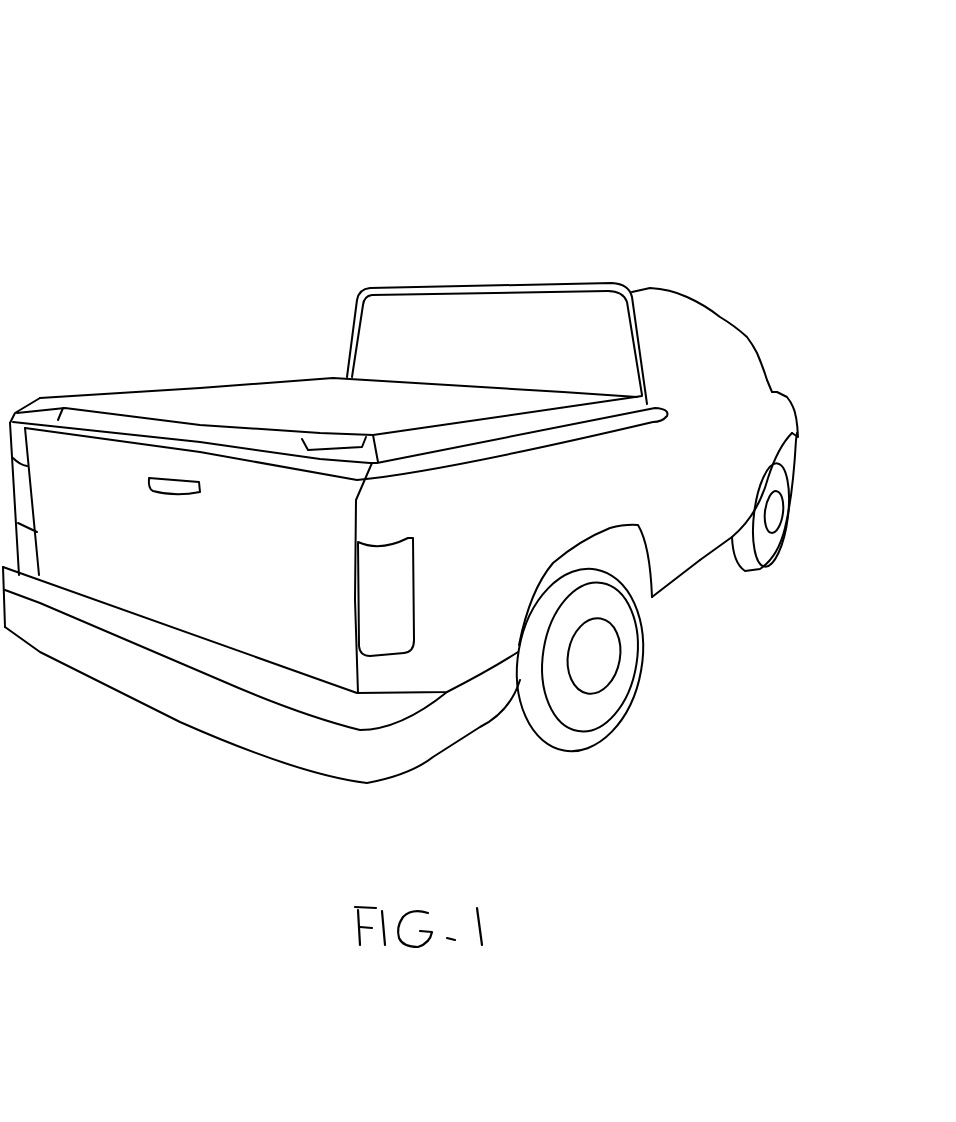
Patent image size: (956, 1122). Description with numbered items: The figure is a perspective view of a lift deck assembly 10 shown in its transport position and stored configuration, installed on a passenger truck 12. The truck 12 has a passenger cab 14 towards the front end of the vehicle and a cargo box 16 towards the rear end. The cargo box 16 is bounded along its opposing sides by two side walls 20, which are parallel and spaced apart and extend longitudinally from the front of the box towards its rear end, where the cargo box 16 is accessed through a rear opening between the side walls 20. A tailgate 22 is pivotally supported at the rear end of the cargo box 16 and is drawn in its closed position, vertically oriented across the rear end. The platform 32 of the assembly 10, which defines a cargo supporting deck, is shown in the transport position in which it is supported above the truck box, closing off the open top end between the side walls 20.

The lift deck assembly 10 is at (225, 82).
The passenger truck 12 is at (837, 212).
The passenger cab 14 is at (667, 250).
The cargo box 16 is at (689, 461).
The side walls 20 is at (488, 578).
The tailgate 22 is at (153, 597).
The platform 32 is at (498, 260).